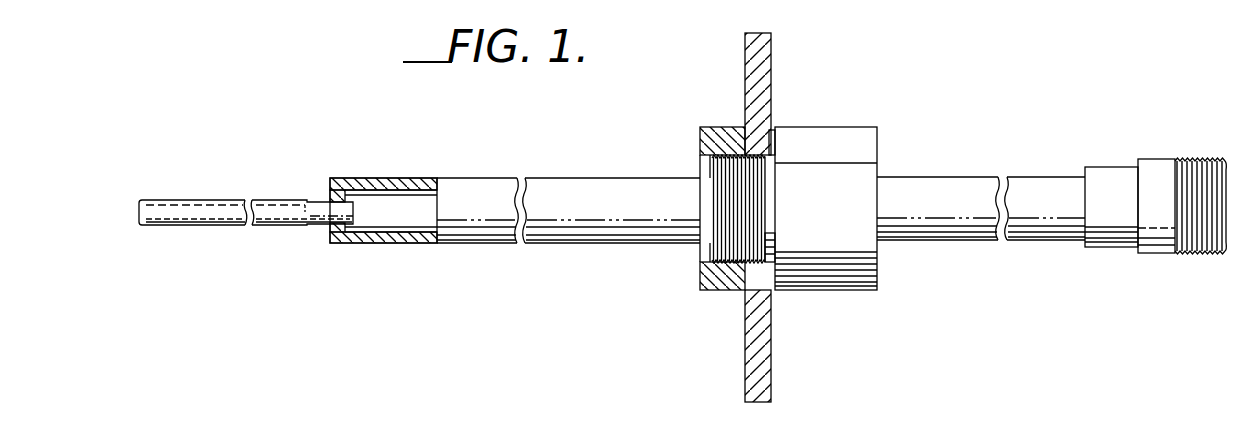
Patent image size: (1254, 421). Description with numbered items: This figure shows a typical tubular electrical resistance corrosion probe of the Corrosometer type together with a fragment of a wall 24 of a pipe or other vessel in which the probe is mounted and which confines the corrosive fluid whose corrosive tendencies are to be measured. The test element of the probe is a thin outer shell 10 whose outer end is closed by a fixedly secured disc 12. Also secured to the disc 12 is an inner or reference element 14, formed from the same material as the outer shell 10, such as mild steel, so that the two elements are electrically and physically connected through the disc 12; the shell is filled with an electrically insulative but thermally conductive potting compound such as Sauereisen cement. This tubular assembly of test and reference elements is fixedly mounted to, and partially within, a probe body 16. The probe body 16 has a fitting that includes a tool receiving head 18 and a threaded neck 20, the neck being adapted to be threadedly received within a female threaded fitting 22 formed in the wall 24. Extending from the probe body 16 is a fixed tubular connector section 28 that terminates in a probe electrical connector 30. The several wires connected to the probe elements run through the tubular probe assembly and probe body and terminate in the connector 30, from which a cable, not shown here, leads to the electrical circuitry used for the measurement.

The outer shell 10 is at (255, 200).
The disc 12 is at (140, 206).
The reference element 14 is at (272, 200).
The probe body 16 is at (528, 178).
The tool receiving head 18 is at (822, 290).
The threaded neck 20 is at (714, 290).
The female threaded fitting 22 is at (705, 262).
The wall 24 is at (746, 365).
The tubular connector section 28 is at (990, 152).
The probe electrical connector 30 is at (1152, 159).